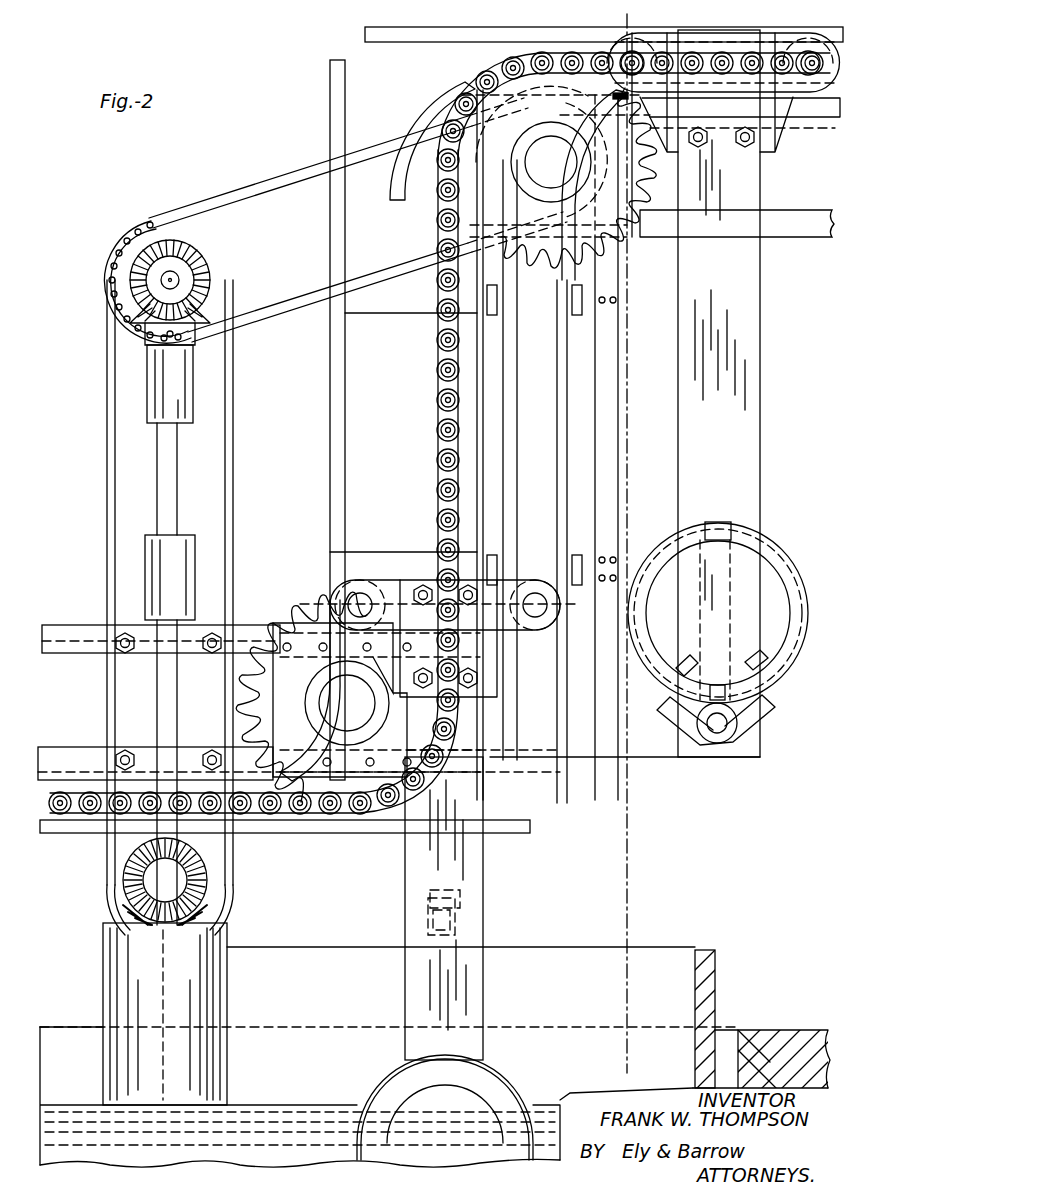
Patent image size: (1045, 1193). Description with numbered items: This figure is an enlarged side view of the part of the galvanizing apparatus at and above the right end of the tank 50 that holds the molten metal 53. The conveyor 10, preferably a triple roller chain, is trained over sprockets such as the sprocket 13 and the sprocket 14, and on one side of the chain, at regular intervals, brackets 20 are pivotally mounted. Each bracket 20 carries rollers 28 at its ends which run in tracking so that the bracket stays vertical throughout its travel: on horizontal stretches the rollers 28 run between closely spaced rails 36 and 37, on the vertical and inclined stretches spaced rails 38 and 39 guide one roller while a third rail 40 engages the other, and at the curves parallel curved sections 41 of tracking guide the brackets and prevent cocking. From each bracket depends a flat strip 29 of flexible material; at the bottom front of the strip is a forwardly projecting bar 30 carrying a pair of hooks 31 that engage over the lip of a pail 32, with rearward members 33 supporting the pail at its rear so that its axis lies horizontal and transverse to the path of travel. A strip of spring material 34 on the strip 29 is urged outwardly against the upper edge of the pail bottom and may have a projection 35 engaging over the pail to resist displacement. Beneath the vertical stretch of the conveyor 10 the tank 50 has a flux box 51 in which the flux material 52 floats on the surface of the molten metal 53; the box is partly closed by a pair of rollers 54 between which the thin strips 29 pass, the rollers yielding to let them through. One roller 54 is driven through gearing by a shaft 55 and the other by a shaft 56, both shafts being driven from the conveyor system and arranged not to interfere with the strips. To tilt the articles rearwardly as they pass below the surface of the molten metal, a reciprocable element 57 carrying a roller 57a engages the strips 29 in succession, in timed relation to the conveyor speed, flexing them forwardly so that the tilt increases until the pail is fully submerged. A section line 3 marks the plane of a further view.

The section line 3- 3 is at (620, 18).
The conveyor 10 is at (437, 435).
The sprocket 13 is at (440, 190).
The sprocket 14 is at (340, 792).
The bracket 20 is at (770, 110).
The roller 28 is at (642, 54).
The flat strip 29 is at (760, 400).
The forwardly projecting bar 30 is at (717, 740).
The hook 31 is at (670, 720).
The pail 32 is at (790, 570).
The supporting member 33 is at (685, 668).
The strip of spring material 34 is at (732, 560).
The projection 35 is at (735, 518).
The rail 36 is at (838, 100).
The rail 37 is at (843, 30).
The rail 38 is at (483, 492).
The rail 39 is at (560, 475).
The third rail 40 is at (330, 410).
The curved section of tracking 41 is at (440, 120).
The tank 50 is at (785, 1042).
The flux box 51 is at (715, 950).
The flux material 52 is at (292, 1085).
The molten metal 53 is at (60, 1105).
The roller 54 is at (196, 993).
The shaft 55 is at (172, 497).
The shaft 56 is at (205, 866).
The element 57 is at (460, 935).
The roller 57a is at (460, 905).